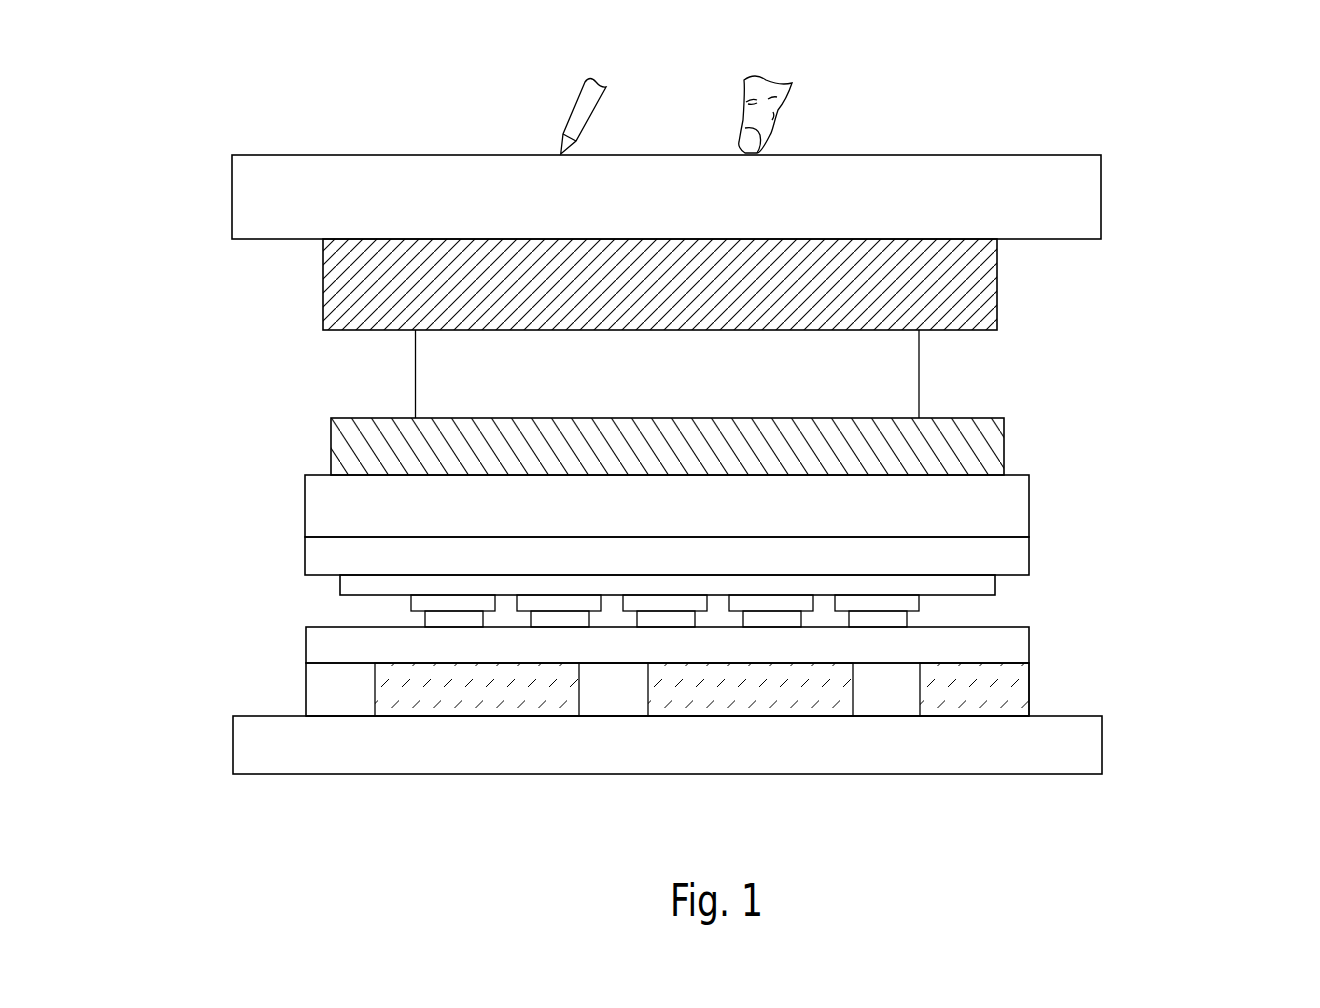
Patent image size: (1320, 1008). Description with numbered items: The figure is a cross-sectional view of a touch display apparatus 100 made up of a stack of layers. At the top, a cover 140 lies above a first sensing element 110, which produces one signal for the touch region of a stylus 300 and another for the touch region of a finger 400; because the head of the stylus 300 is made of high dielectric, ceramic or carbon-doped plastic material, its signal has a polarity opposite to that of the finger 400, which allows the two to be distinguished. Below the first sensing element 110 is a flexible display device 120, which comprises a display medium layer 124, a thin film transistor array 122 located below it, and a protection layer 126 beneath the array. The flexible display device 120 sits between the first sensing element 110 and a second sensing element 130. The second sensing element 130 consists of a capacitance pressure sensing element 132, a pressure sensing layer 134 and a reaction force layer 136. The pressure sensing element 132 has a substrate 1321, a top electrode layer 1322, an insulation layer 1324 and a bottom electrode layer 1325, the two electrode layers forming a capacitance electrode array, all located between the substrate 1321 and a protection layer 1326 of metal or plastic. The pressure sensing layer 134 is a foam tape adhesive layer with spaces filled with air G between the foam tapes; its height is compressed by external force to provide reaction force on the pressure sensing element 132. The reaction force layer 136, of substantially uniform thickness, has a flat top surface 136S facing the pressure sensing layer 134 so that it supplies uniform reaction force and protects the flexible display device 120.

The touch display apparatus 100 is at (177, 30).
The stylus 300 is at (576, 111).
The finger 400 is at (745, 95).
The cover 140 is at (1101, 192).
The first sensing element 110 is at (993, 290).
The flexible display device 120 is at (755, 433).
The display medium layer 124 is at (906, 383).
The thin film transistor array 122 is at (1003, 445).
The protection layer 126 is at (720, 506).
The second sensing element 130 is at (752, 686).
The pressure sensing element 132 is at (755, 610).
The substrate 1321 is at (1027, 557).
The top electrode layer 1322 is at (990, 590).
The insulation layer 1324 is at (913, 604).
The bottom electrode layer 1325 is at (912, 615).
The protection layer 1326 is at (720, 659).
The pressure sensing layer 134 is at (897, 706).
The reaction force layer 136 is at (1098, 735).
The flat top surface 136S is at (493, 716).
The air G is at (750, 716).